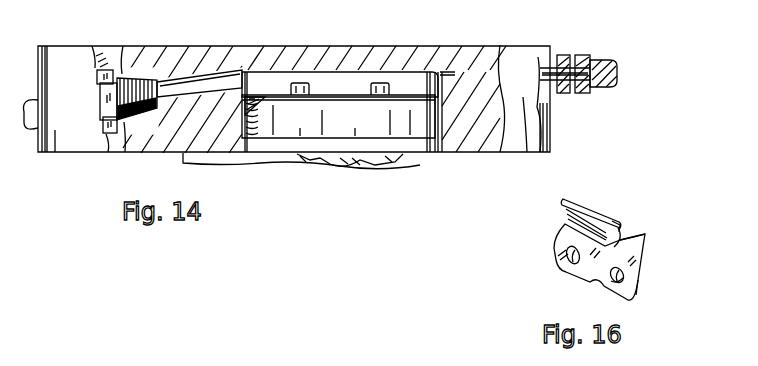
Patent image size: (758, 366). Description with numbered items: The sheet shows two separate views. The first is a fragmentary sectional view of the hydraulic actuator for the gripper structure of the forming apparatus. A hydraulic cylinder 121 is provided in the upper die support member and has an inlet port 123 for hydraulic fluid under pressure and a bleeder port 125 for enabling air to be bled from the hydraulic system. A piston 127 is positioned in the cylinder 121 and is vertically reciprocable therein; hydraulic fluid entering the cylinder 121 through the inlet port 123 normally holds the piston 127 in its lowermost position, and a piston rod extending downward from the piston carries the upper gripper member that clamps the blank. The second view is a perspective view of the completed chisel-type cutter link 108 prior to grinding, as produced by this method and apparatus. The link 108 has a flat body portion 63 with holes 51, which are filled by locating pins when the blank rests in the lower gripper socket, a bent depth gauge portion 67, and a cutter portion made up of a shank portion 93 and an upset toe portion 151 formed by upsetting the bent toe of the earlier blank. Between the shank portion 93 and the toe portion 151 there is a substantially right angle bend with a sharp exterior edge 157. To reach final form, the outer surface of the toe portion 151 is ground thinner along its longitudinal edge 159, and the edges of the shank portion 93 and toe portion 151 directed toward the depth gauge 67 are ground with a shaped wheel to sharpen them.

In FIG. 14, the hydraulic cylinder 121 is at (345, 85).
In FIG. 14, the inlet port 123 is at (215, 73).
In FIG. 14, the bleeder port 125 is at (450, 72).
In FIG. 14, the piston 127 is at (270, 137).
In FIG. 16, the holes 51 is at (622, 277).
In FIG. 16, the body portion 63 is at (583, 270).
In FIG. 16, the depth gauge portion 67 is at (630, 236).
In FIG. 16, the shank portion 93 is at (622, 245).
In FIG. 16, the completely formed blank 108 is at (637, 288).
In FIG. 16, the upset toe portion 151 is at (563, 258).
In FIG. 16, the sharp exterior edge 157 is at (619, 225).
In FIG. 16, the longitudinal edge 159 is at (575, 197).